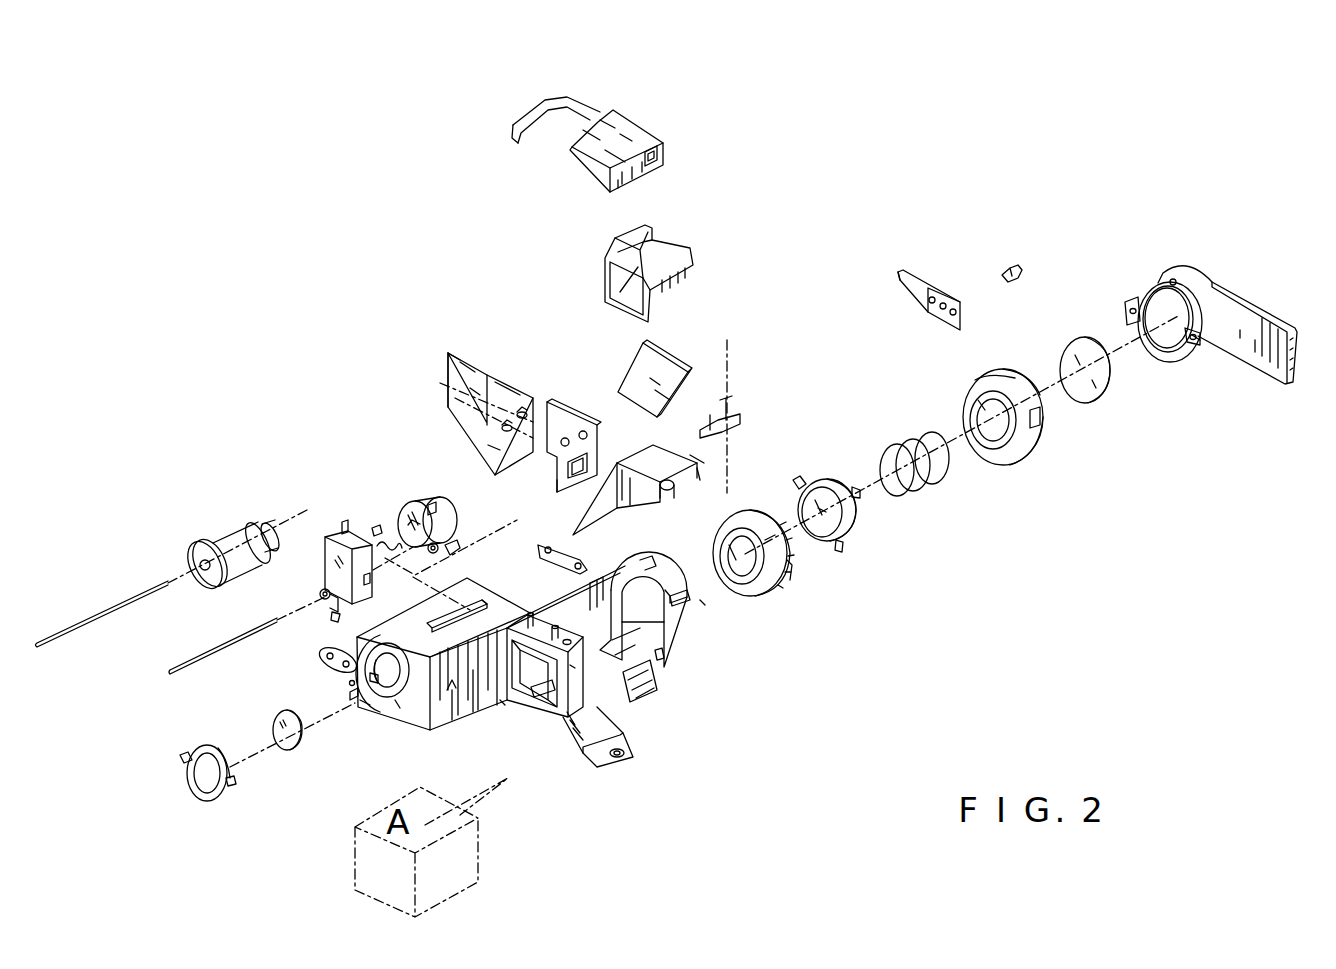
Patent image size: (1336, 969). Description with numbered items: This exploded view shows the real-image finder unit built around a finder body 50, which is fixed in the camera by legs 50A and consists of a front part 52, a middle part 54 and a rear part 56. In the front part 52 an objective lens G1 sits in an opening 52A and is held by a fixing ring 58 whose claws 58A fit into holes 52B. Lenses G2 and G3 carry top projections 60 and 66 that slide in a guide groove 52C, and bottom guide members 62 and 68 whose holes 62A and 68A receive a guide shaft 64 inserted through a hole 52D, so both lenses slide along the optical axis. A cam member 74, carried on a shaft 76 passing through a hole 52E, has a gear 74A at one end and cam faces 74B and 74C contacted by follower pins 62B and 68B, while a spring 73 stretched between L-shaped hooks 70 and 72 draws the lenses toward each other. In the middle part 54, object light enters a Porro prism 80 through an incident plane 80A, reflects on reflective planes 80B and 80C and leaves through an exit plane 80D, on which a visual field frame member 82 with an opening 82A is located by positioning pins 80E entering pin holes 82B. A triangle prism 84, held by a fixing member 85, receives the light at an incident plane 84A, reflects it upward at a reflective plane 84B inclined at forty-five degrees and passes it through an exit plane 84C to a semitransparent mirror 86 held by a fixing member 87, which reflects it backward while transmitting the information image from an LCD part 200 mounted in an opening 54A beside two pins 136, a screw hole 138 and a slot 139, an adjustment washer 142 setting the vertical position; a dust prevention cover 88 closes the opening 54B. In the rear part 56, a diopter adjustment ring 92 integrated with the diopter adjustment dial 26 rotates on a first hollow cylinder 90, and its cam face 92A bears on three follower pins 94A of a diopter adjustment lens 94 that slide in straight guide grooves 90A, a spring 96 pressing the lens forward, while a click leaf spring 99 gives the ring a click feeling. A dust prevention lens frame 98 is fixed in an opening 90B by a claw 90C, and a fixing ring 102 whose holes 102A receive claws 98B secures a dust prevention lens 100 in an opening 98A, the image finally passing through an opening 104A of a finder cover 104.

The diopter adjustment dial 26 is at (770, 540).
The finder body 50 is at (555, 778).
The legs 50A is at (318, 662).
The front part 52 is at (456, 698).
The opening 52A is at (396, 705).
The holes 52B is at (430, 750).
The guide groove 52C is at (516, 741).
The hole 52D is at (348, 688).
The hole 52E is at (368, 683).
The middle part 54 is at (540, 577).
The opening 54A is at (598, 740).
The opening 54B is at (650, 692).
The rear part 56 is at (707, 636).
The fixing ring 58 is at (200, 800).
The claws 58A is at (182, 757).
The projection 60 is at (348, 531).
The guide member 62 is at (325, 592).
The hole 62A is at (318, 594).
The follower pin 62B is at (333, 616).
The guide shaft 64 is at (215, 655).
The projection 66 is at (432, 503).
The guide member 68 is at (457, 542).
The hole 68A is at (375, 527).
The follower pin 68B is at (440, 551).
The hook 70 is at (370, 580).
The hook 72 is at (452, 508).
The spring 73 is at (392, 546).
The cam member 74 is at (200, 519).
The gear 74A is at (196, 550).
The cam face 74B is at (236, 545).
The cam face 74C is at (268, 524).
The shaft 76 is at (80, 640).
The Porro prism 80 is at (498, 352).
The incident plane 80A is at (447, 378).
The reflective plane 80B is at (508, 422).
The reflective plane 80C is at (478, 432).
The exit plane 80D is at (492, 450).
The positioning pins 80E is at (509, 424).
The visual field frame member 82 is at (584, 436).
The opening 82A is at (575, 478).
The pin holes 82B is at (568, 440).
The triangle prism 84 is at (700, 466).
The incident plane 84A is at (640, 492).
The reflective plane 84B is at (702, 412).
The exit plane 84C is at (733, 440).
The fixing member 85 is at (738, 412).
The semitransparent mirror 86 is at (700, 365).
The fixing member 87 is at (662, 300).
The dust prevention cover 88 is at (633, 132).
The first hollow cylinder 90 is at (695, 628).
The straight guide grooves 90A is at (690, 600).
The opening 90B is at (658, 658).
The claw 90C is at (702, 553).
The diopter adjustment ring 92 is at (802, 592).
The cam face 92A is at (792, 570).
The diopter adjustment lens 94 is at (857, 524).
The follower pins 94A is at (806, 480).
The spring 96 is at (945, 468).
The dust prevention lens frame 98 is at (1020, 447).
The opening 98A is at (978, 402).
The claws 98B is at (1040, 418).
The click leaf spring 99 is at (945, 290).
The dust prevention lens 100 is at (1105, 385).
The fixing ring 102 is at (1190, 345).
The holes 102A is at (1130, 303).
The finder cover 104 is at (1217, 276).
The opening 104A is at (1172, 279).
The pins 136 is at (565, 600).
The screw hole 138 is at (570, 670).
The slot 139 is at (533, 690).
The adjustment washer 142 is at (520, 575).
The LCD part 200 is at (477, 868).
The objective lens G1 is at (288, 740).
The lens G2 is at (343, 528).
The lens G3 is at (412, 522).